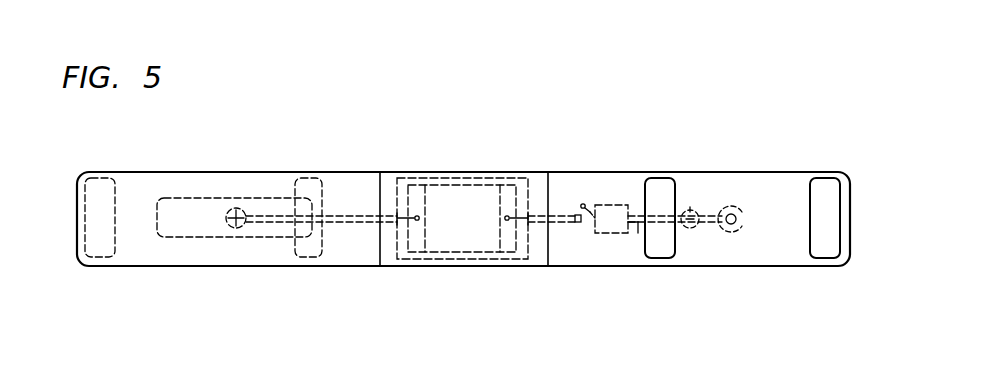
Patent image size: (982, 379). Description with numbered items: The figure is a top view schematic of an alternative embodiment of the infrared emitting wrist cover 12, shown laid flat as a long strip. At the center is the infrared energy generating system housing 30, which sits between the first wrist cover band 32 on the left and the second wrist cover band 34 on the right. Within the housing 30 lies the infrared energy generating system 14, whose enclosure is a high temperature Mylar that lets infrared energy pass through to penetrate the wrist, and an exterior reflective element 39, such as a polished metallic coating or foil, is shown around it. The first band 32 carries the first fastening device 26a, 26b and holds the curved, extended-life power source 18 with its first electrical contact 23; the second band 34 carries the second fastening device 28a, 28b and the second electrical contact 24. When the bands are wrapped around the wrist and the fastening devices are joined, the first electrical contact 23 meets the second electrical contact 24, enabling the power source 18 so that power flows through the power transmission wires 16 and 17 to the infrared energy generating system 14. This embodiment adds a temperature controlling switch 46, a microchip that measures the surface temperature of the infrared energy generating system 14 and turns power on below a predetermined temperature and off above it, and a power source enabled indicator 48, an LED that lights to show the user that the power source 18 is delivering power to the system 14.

The infrared emitting wrist cover 12 is at (551, 134).
The infrared energy generating system 14 is at (442, 256).
The power transmission wire 16 is at (350, 224).
The power transmission wire 17 is at (637, 234).
The power source 18 is at (203, 235).
The first electrical contact 23 is at (237, 207).
The second electrical contact 24 is at (690, 208).
The first fastening device 26a is at (100, 178).
The first fastening device 26b is at (305, 182).
The second fastening device 28a is at (823, 256).
The second fastening device 28b is at (660, 185).
The infrared energy generating system housing 30 is at (468, 171).
The first wrist cover band 32 is at (133, 264).
The second wrist cover band 34 is at (720, 264).
The exterior reflective element 39 is at (528, 266).
The temperature controlling switch 46 is at (605, 234).
The power source enabled indicator 48 is at (743, 213).